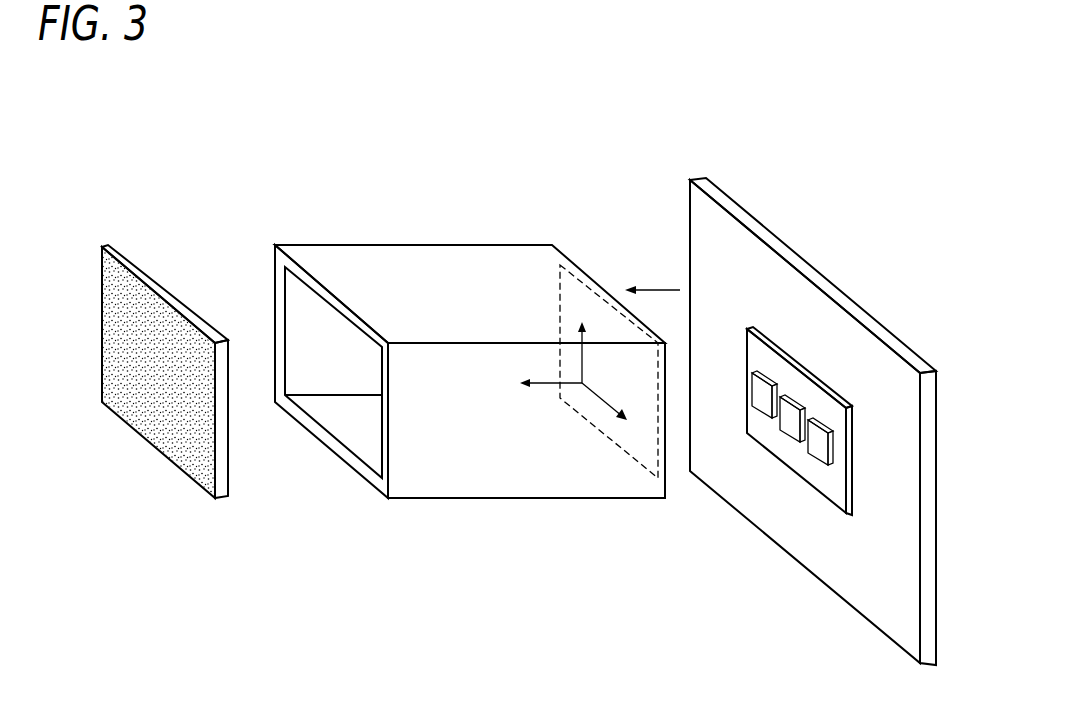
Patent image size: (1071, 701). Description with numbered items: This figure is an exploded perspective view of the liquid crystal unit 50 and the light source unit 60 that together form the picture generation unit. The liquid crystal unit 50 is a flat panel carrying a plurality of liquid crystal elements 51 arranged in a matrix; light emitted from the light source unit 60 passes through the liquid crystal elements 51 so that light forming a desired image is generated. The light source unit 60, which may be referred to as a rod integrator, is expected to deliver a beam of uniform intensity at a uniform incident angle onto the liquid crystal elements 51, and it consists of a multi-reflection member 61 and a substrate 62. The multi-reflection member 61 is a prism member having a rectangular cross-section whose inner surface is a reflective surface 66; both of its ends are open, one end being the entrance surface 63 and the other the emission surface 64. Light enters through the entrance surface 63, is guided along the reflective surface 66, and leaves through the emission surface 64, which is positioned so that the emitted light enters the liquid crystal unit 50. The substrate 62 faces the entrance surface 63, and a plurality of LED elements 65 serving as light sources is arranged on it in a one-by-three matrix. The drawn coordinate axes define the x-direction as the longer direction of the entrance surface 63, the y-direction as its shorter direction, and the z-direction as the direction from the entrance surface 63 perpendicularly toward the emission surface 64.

The liquid crystal unit 50 is at (150, 349).
The liquid crystal element 51 is at (112, 294).
The light source unit 60 is at (642, 87).
The multi-reflection member 61 is at (442, 291).
The substrate 62 is at (773, 374).
The entrance surface 63 is at (586, 287).
The emission surface 64 is at (300, 306).
The LED element 65 is at (790, 415).
The reflective surface 66 is at (355, 440).